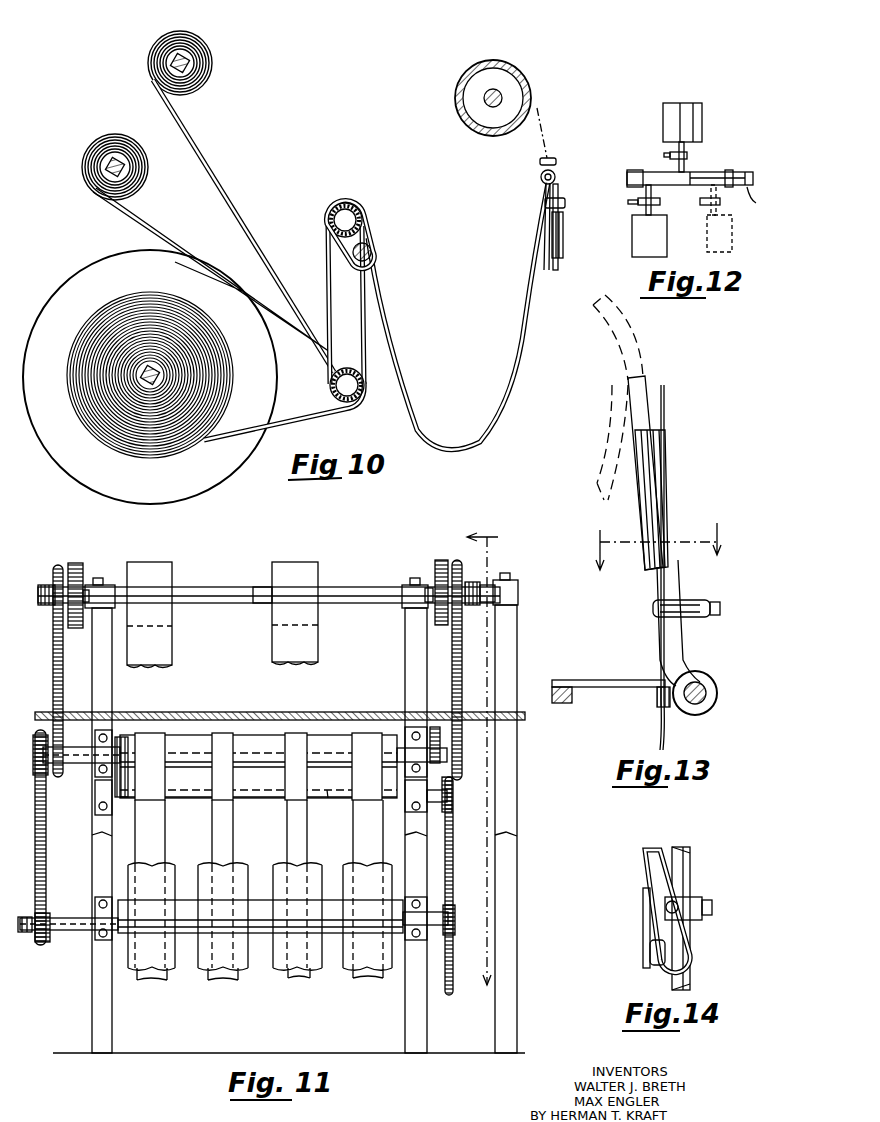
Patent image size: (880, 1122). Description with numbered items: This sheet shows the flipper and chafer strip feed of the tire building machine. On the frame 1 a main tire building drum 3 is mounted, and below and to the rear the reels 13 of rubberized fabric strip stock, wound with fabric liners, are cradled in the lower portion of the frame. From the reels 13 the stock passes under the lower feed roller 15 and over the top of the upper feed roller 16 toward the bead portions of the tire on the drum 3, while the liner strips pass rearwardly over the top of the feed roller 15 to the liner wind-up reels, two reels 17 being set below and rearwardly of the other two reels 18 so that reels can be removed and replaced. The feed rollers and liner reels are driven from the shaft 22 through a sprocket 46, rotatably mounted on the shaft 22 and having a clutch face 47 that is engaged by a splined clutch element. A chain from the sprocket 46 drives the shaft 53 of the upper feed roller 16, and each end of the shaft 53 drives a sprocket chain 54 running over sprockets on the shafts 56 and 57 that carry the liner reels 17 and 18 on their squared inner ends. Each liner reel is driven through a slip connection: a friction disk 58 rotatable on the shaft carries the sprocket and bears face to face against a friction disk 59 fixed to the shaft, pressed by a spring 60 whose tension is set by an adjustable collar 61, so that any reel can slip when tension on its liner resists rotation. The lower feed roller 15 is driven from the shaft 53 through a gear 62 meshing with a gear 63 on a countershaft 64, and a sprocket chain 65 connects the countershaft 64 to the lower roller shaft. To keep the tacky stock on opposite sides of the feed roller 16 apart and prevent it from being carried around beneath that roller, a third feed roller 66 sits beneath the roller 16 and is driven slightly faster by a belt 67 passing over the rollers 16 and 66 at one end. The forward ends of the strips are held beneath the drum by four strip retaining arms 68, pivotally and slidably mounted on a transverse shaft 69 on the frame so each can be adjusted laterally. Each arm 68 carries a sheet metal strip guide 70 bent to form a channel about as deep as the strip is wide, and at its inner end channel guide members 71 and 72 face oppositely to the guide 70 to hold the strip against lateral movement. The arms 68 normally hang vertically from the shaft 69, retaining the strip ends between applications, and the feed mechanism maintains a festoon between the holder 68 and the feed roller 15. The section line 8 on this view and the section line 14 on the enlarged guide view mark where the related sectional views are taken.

In FIG. 13, the frame 1 is at (563, 703).
In FIG. 11, the frame 1 is at (92, 1018).
In FIG. 10, the main tire building drum 3 is at (516, 78).
In FIG. 11, the section line 8- 8 is at (493, 769).
In FIG. 10, the reel 13 is at (72, 282).
In FIG. 13, the section line 14- 14 is at (650, 536).
In FIG. 10, the lower feed roller 15 is at (331, 386).
In FIG. 11, the lower feed roller 15 is at (332, 933).
In FIG. 10, the upper feed roller 16 is at (362, 226).
In FIG. 11, the upper feed roller 16 is at (333, 735).
In FIG. 10, the liner reel 17 is at (150, 170).
In FIG. 10, the liner reel 18 is at (212, 78).
In FIG. 11, the liner reel 18 is at (275, 563).
In FIG. 11, the shaft 22 is at (67, 917).
In FIG. 11, the sprocket 46 is at (42, 940).
In FIG. 11, the clutch face 47 is at (30, 933).
In FIG. 11, the shaft 53 is at (34, 770).
In FIG. 11, the sprocket chain 54 is at (53, 668).
In FIG. 10, the shaft 56 is at (123, 168).
In FIG. 10, the shaft 57 is at (190, 66).
In FIG. 11, the shaft 57 is at (196, 578).
In FIG. 11, the friction disk 58 is at (74, 563).
In FIG. 11, the friction disk 59 is at (86, 565).
In FIG. 11, the spring 60 is at (478, 580).
In FIG. 11, the collar 61 is at (495, 585).
In FIG. 11, the gear 62 is at (440, 745).
In FIG. 11, the gear 63 is at (466, 886).
In FIG. 11, the countershaft 64 is at (452, 797).
In FIG. 11, the sprocket chain 65 is at (455, 892).
In FIG. 10, the third feed roller 66 is at (372, 248).
In FIG. 11, the third feed roller 66 is at (327, 810).
In FIG. 10, the belt 67 is at (340, 245).
In FIG. 11, the belt 67 is at (118, 790).
In FIG. 10, the strip retaining arm 68 is at (561, 197).
In FIG. 12, the strip retaining arm 68 is at (688, 165).
In FIG. 13, the strip retaining arm 68 is at (680, 580).
In FIG. 14, the strip retaining arm 68 is at (687, 902).
In FIG. 10, the transverse shaft 69 is at (553, 172).
In FIG. 12, the transverse shaft 69 is at (767, 205).
In FIG. 13, the transverse shaft 69 is at (713, 682).
In FIG. 14, the transverse shaft 69 is at (692, 973).
In FIG. 10, the strip guide 70 is at (565, 240).
In FIG. 12, the strip guide 70 is at (667, 238).
In FIG. 13, the strip guide 70 is at (663, 445).
In FIG. 14, the strip guide 70 is at (658, 850).
In FIG. 10, the channel guide member 71 is at (560, 183).
In FIG. 13, the channel guide member 71 is at (657, 703).
In FIG. 14, the channel guide member 71 is at (642, 925).
In FIG. 10, the channel guide member 72 is at (560, 207).
In FIG. 13, the channel guide member 72 is at (657, 608).
In FIG. 14, the channel guide member 72 is at (650, 955).